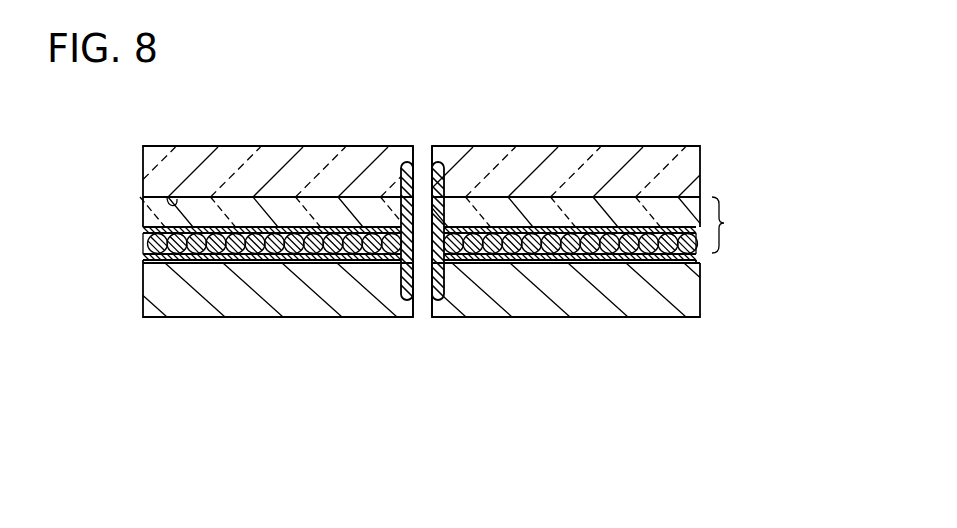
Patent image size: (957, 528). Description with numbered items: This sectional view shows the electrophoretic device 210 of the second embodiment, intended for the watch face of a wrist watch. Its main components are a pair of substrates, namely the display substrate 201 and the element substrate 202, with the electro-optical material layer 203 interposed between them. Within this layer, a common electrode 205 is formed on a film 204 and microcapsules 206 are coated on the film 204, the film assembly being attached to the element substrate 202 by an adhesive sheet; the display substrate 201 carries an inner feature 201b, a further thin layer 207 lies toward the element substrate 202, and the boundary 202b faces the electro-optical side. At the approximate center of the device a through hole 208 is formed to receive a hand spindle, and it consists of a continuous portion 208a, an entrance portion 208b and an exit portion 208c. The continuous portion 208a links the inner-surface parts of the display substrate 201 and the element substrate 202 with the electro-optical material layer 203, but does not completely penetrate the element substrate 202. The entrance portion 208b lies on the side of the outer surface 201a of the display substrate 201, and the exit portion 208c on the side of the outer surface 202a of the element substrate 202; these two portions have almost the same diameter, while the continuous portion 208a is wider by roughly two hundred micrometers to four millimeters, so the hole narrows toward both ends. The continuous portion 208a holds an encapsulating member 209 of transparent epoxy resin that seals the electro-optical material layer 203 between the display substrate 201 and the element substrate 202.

The display substrate 201 is at (682, 165).
The outer surface of the display substrate 201a is at (275, 147).
The recess of upper substrate 201b is at (167, 198).
The element substrate 202 is at (682, 293).
The outer surface of the element substrate 202a is at (542, 318).
The upper surface of lower substrate 202b is at (642, 262).
The electro-optical material layer 203 is at (725, 225).
The film 204 is at (147, 213).
The common electrode 205 is at (145, 230).
The microcapsules 206 is at (150, 244).
The adhesive layer 207 is at (147, 259).
The through hole 208 is at (428, 137).
The continuous portion 208a is at (447, 170).
The entrance portion 208b is at (418, 152).
The exit portion 208c is at (417, 308).
The encapsulating member 209 is at (402, 296).
The electrophoretic device 210 is at (603, 105).